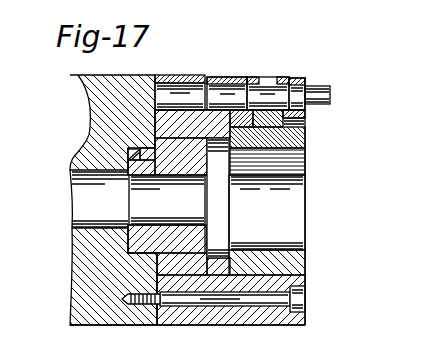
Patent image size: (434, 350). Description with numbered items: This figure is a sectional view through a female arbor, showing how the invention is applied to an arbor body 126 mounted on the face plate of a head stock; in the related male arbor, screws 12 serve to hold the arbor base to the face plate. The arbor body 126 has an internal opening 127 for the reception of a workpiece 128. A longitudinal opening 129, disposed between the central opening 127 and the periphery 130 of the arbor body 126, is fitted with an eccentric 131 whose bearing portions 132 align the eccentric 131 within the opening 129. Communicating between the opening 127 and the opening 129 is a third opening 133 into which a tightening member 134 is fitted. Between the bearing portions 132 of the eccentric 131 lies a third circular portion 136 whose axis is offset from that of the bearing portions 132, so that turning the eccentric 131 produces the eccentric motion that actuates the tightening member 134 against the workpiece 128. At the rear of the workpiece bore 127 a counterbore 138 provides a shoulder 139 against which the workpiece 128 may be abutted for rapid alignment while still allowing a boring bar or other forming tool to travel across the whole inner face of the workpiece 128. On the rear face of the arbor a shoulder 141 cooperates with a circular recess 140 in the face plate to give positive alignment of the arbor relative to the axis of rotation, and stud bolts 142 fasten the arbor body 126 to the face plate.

The screws 12 is at (102, 327).
The arbor body 126 is at (312, 329).
The internal opening 127 is at (270, 122).
The workpiece 128 is at (305, 150).
The longitudinal opening 129 is at (207, 78).
The periphery 130 is at (161, 76).
The eccentric 131 is at (340, 96).
The bearing portions 132 is at (219, 66).
The third opening 133 is at (306, 113).
The tightening member 134 is at (306, 139).
The third circular portion 136 is at (267, 82).
The counterbore 138 is at (216, 142).
The shoulder 139 is at (236, 266).
The circular recess 140 is at (128, 242).
The shoulder 141 is at (128, 151).
The stud bolts 142 is at (306, 301).